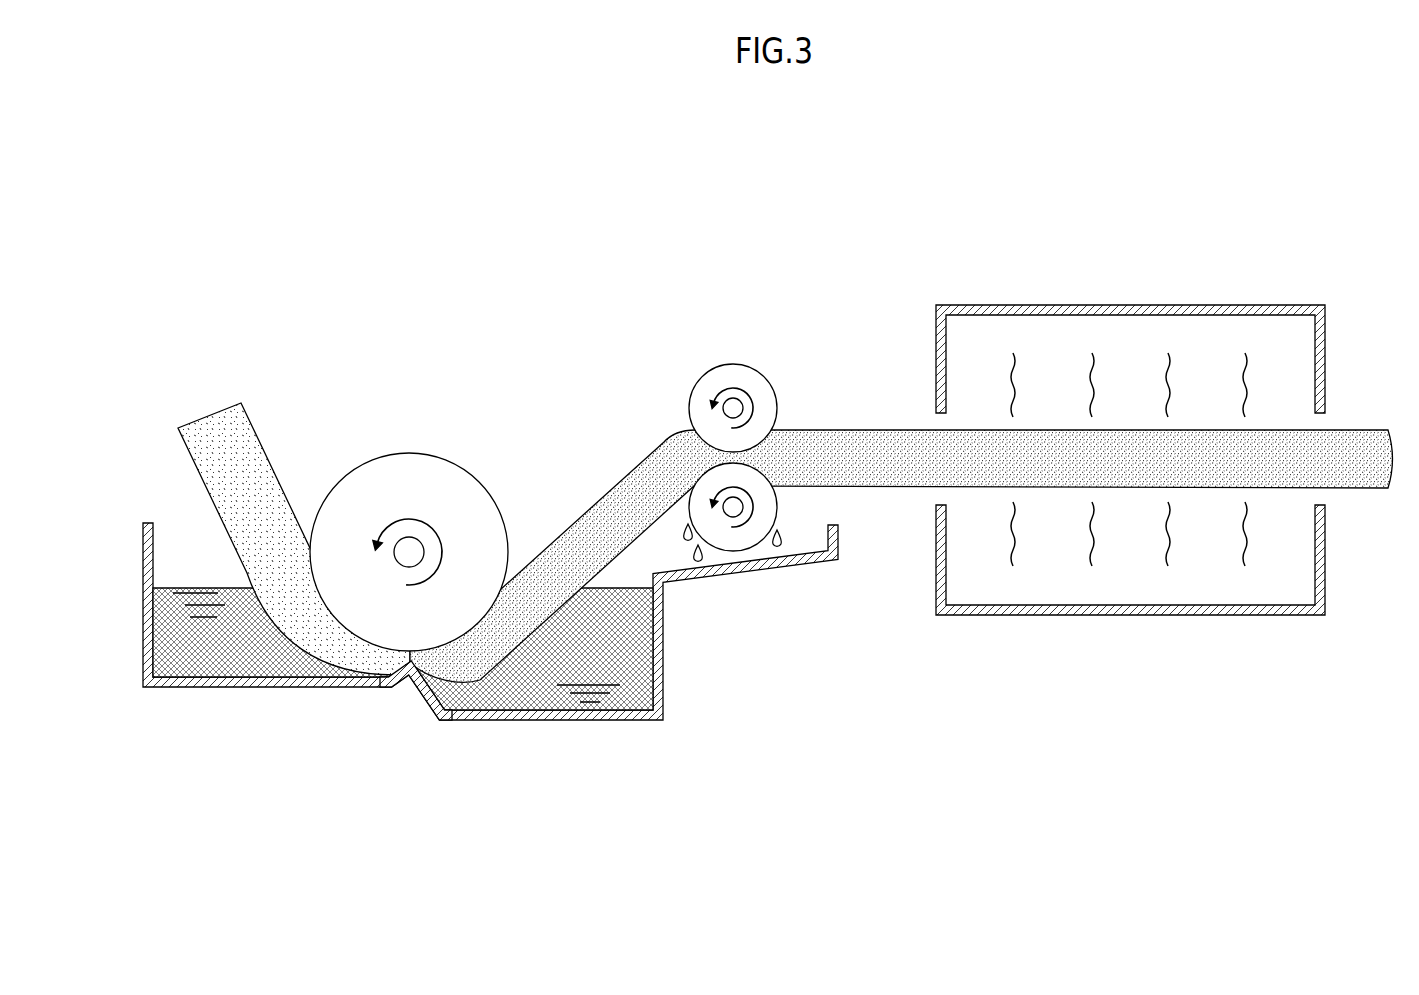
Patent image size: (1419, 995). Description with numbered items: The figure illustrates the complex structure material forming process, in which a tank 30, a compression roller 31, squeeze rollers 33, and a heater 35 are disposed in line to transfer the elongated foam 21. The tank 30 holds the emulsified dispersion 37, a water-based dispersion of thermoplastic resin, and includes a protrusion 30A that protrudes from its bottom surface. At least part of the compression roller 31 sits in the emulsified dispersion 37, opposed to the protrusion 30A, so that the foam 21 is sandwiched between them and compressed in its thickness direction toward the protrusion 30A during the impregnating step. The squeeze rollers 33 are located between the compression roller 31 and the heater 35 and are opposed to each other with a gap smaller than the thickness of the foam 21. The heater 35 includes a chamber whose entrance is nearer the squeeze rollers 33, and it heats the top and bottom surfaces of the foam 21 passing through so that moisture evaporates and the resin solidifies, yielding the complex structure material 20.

The complex structure material 20 is at (1350, 453).
The foam 21 is at (243, 457).
The tank 30 is at (663, 662).
The protrusion 30A is at (468, 680).
The compression roller 31 is at (462, 485).
The squeeze rollers 33 is at (722, 380).
The heater 35 is at (1027, 310).
The emulsified dispersion 37 is at (621, 657).